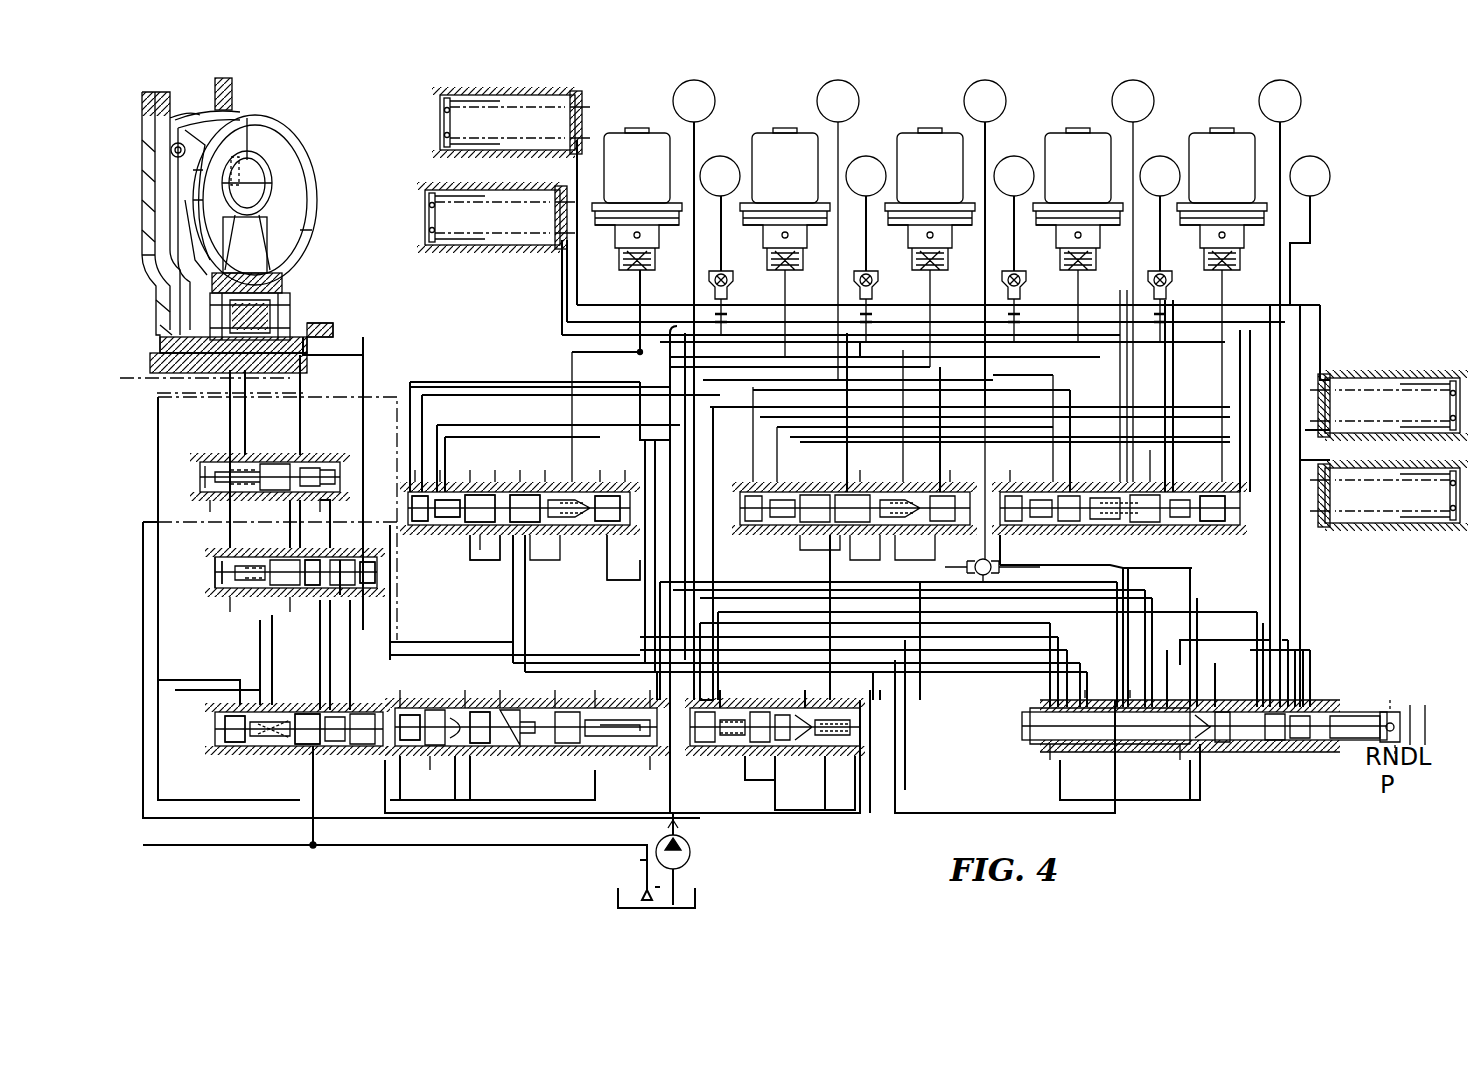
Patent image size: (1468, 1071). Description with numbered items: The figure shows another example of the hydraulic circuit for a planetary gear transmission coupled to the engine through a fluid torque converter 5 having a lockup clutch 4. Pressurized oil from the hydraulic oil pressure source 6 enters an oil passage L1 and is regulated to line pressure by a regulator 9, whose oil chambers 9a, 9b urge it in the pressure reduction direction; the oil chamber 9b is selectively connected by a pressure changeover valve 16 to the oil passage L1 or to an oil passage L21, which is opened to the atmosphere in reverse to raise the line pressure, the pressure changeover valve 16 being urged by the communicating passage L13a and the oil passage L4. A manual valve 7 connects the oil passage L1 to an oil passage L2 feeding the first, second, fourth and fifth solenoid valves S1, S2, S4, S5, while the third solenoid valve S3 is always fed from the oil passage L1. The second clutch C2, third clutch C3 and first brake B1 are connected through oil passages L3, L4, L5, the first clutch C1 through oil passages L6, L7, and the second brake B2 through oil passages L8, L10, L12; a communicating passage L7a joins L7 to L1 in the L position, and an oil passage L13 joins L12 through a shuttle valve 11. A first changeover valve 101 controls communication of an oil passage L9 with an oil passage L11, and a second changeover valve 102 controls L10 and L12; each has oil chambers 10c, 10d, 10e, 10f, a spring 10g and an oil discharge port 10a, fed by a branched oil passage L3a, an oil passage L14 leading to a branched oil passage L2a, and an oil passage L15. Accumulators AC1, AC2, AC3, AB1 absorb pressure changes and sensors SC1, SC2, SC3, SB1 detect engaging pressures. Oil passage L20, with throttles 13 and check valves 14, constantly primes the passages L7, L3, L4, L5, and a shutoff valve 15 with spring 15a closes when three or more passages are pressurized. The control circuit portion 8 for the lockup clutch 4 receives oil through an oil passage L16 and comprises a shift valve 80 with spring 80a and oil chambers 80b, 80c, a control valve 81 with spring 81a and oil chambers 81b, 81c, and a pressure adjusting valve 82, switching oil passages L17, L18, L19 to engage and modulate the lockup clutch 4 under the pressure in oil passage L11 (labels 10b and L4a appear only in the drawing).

The lockup clutch 4 is at (165, 232).
The fluid torque converter 5 is at (300, 140).
The hydraulic oil pressure source 6 is at (690, 852).
The manual valve 7 is at (1245, 748).
The control circuit portion 8 is at (175, 400).
The regulator 9 is at (555, 755).
The oil chamber 9a is at (430, 708).
The oil chamber 9b is at (435, 712).
The first changeover valve 101 is at (470, 478).
The second changeover valve 102 is at (800, 545).
The oil discharge port 10a is at (535, 545).
The shift valve spring chamber 10b is at (495, 550).
The oil chamber 10c is at (415, 480).
The oil chamber 10d is at (450, 480).
The oil chamber 10e is at (480, 475).
The oil chamber 10f is at (580, 490).
The spring 10g is at (617, 570).
The shuttle valve 11 is at (995, 560).
The throttle 13 is at (728, 318).
The check valve 14 is at (733, 285).
The shutoff valve 15 is at (1114, 530).
The spring 15a is at (1212, 480).
The pressure changeover valve 16 is at (775, 772).
The shift valve 80 is at (360, 750).
The spring 80a is at (285, 750).
The oil chamber 80b is at (395, 818).
The oil chamber 80c is at (240, 755).
The control valve 81 is at (285, 595).
The spring 81a is at (230, 578).
The oil chamber 81b is at (340, 555).
The oil chamber 81c is at (380, 575).
The pressure adjusting valve 82 is at (290, 475).
The first solenoid valve S1 is at (635, 130).
The second solenoid valve S2 is at (783, 130).
The third solenoid valve S3 is at (928, 130).
The fourth solenoid valve S4 is at (1076, 130).
The fifth solenoid valve S5 is at (1218, 130).
The first clutch C1 is at (694, 101).
The second clutch C2 is at (838, 101).
The third clutch C3 is at (985, 101).
The first brake B1 is at (1133, 101).
The second brake B2 is at (1280, 393).
The hydraulic oil pressure sensor SC1 is at (722, 160).
The hydraulic oil pressure sensor SC2 is at (868, 160).
The hydraulic oil pressure sensor SC3 is at (1014, 160).
The hydraulic oil pressure sensor SB1 is at (1160, 160).
The accumulator AC1 is at (530, 245).
The accumulator AC2 is at (555, 140).
The accumulator AC3 is at (1345, 385).
The accumulator AB1 is at (1350, 530).
The oil passage L1 is at (675, 783).
The oil passage L2 is at (935, 345).
The branched oil passage L2a is at (568, 350).
The oil passage L3 is at (1052, 375).
The branched oil passage L3a is at (770, 410).
The oil passage L4 is at (985, 280).
The oil line L4a is at (520, 430).
The oil passage L5 is at (1140, 375).
The oil passage L6 is at (920, 725).
The oil passage L7 is at (745, 625).
The communicating passage L7a is at (1305, 655).
The oil passage L8 is at (1282, 560).
The oil passage L9 is at (1050, 682).
The oil passage L10 is at (905, 780).
The oil passage L11 is at (404, 640).
The oil passage L12 is at (1290, 295).
The oil passage L13 is at (1205, 572).
The communicating passage L13a is at (1170, 800).
The oil passage L14 is at (540, 590).
The oil passage L15 is at (1120, 575).
The oil passage L16 is at (460, 810).
The oil passage L17 is at (173, 652).
The oil passage L18 is at (365, 355).
The oil passage L19 is at (280, 690).
The oil passage L20 is at (868, 330).
The oil passage L21 is at (875, 690).